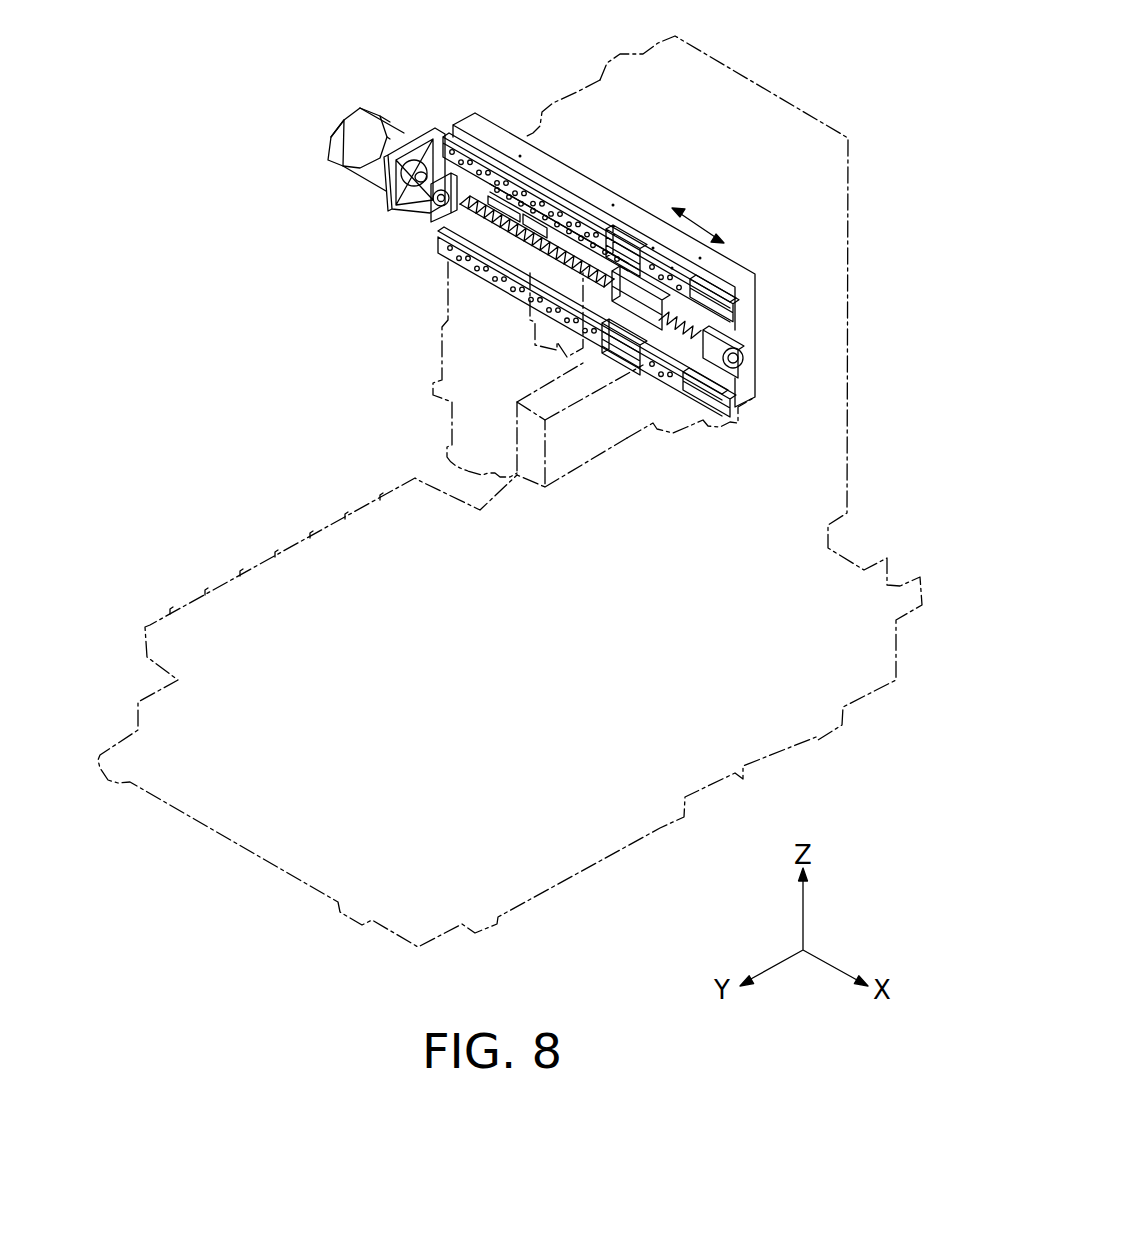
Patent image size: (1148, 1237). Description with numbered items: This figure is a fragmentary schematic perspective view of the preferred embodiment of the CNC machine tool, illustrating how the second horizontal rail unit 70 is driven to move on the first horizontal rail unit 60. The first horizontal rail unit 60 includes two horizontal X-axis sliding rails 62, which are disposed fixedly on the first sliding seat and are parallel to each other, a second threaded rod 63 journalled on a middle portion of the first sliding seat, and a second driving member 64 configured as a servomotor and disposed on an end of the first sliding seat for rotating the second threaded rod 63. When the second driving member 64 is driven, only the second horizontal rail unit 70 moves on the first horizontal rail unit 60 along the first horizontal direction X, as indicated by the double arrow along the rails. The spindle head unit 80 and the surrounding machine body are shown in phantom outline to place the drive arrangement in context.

The first horizontal rail unit 60 is at (541, 220).
The horizontal X-axis sliding rails 62 is at (494, 165).
The second threaded rod 63 is at (557, 237).
The second driving member 64 is at (378, 122).
The second horizontal rail unit 70 is at (630, 443).
The spindle head unit 80 is at (447, 415).